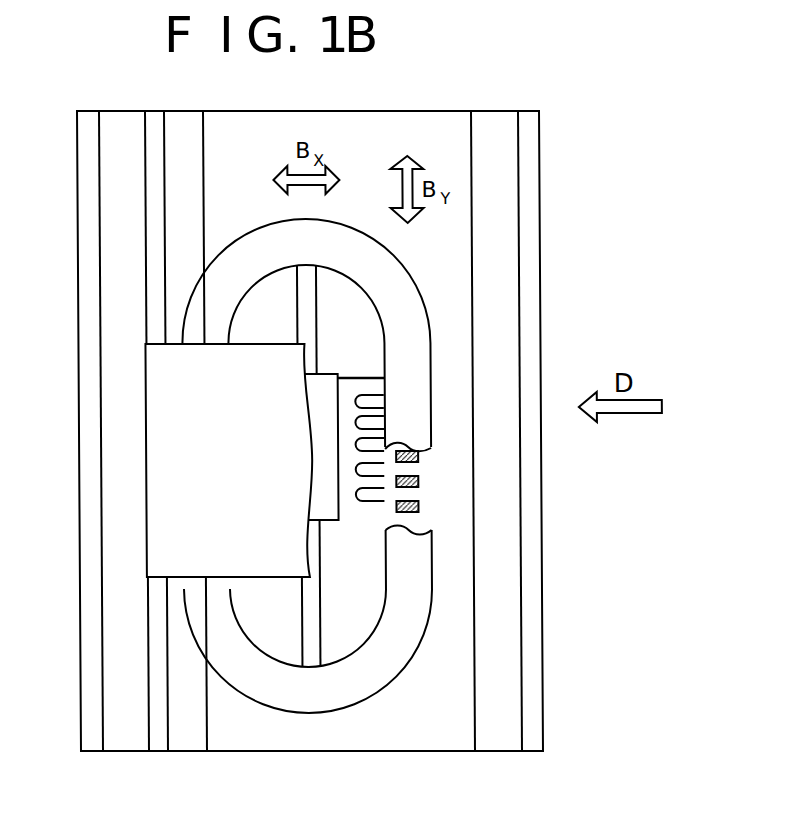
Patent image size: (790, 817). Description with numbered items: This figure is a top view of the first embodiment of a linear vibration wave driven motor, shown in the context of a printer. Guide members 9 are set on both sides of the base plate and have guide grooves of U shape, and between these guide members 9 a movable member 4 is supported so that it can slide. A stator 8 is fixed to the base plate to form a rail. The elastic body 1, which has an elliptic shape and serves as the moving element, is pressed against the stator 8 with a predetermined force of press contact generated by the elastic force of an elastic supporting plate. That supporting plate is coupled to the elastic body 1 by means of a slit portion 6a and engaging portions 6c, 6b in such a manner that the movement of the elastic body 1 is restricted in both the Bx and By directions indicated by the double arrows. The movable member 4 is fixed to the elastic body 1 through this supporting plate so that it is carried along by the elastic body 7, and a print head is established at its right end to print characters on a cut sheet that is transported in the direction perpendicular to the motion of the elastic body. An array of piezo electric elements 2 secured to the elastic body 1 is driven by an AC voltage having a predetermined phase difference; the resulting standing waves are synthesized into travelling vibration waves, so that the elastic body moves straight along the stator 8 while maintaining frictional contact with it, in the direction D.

The elastic body 1 is at (432, 331).
The piezo electric elements 2 is at (402, 363).
The movable member 4 is at (174, 403).
The slit portion 6a is at (383, 511).
The engaging portion 6b is at (315, 629).
The engaging portion 6c is at (308, 300).
The elastic body 7 is at (417, 478).
The stator 8 is at (183, 732).
The guide members 9 is at (494, 608).